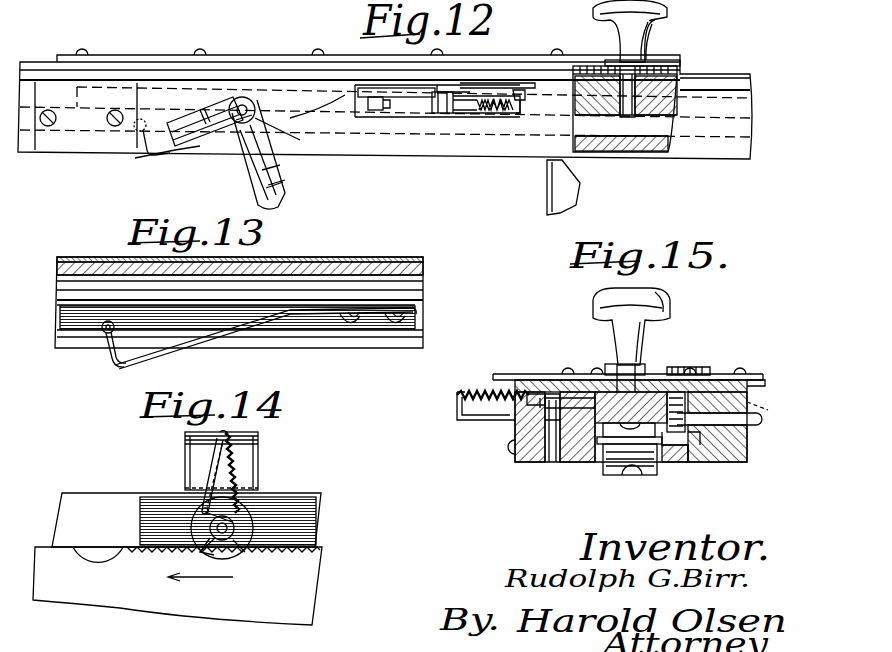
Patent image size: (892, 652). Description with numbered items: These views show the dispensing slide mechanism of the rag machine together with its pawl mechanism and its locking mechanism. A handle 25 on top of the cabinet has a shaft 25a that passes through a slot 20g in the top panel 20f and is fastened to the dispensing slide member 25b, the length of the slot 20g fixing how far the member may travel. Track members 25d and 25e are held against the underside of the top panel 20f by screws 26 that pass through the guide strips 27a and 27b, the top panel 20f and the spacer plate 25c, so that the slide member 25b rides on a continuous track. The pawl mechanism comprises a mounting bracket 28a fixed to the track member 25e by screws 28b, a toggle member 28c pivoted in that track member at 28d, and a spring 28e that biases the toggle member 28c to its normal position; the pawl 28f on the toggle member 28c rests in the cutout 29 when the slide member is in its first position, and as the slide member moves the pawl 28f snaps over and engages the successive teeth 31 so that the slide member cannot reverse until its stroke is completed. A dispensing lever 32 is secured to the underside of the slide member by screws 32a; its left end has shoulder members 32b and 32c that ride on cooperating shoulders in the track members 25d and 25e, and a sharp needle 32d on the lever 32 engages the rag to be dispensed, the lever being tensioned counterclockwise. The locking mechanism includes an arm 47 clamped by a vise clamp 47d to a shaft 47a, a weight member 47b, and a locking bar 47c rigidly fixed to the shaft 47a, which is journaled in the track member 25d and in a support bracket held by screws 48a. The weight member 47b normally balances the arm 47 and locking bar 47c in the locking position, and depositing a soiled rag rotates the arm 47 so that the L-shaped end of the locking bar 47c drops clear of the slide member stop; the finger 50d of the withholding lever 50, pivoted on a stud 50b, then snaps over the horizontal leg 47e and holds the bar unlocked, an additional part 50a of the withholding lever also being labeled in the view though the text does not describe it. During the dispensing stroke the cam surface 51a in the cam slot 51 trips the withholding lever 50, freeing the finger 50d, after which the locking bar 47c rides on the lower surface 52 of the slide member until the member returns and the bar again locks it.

In FIG. 15, the top panel 20f is at (787, 363).
In FIG. 15, the slot 20g is at (617, 367).
In FIG. 12, the handle 25 is at (660, 12).
In FIG. 15, the handle 25 is at (668, 304).
In FIG. 12, the shaft 25a is at (626, 106).
In FIG. 15, the shaft 25a is at (640, 365).
In FIG. 13, the dispensing slide member 25b is at (405, 300).
In FIG. 14, the dispensing slide member 25b is at (317, 598).
In FIG. 15, the dispensing slide member 25b is at (710, 353).
In FIG. 15, the spacer plate 25c is at (748, 390).
In FIG. 15, the track member 25d is at (735, 463).
In FIG. 14, the track member 25e is at (318, 513).
In FIG. 15, the track member 25e is at (530, 463).
In FIG. 15, the screws 26 is at (577, 372).
In FIG. 15, the guide strip 27a is at (565, 374).
In FIG. 12, the guide strip 27b is at (165, 60).
In FIG. 15, the guide strip 27b is at (742, 374).
In FIG. 14, the mounting bracket 28a is at (258, 468).
In FIG. 15, the mounting bracket 28a is at (472, 421).
In FIG. 14, the screws 28b is at (207, 470).
In FIG. 15, the screws 28b is at (510, 448).
In FIG. 14, the toggle member 28c is at (247, 522).
In FIG. 15, the toggle member 28c is at (537, 380).
In FIG. 15, the pivot 28d is at (568, 463).
In FIG. 14, the spring 28e is at (233, 457).
In FIG. 15, the spring 28e is at (478, 395).
In FIG. 14, the pawl 28f is at (195, 522).
In FIG. 14, the cutout 29 is at (98, 562).
In FIG. 14, the teeth 31 is at (145, 548).
In FIG. 12, the dispensing lever 32 is at (166, 158).
In FIG. 13, the dispensing lever 32 is at (180, 355).
In FIG. 15, the dispensing lever 32 is at (647, 477).
In FIG. 13, the screws 32a is at (372, 325).
In FIG. 15, the shoulder member 32b is at (670, 464).
In FIG. 15, the shoulder member 32c is at (595, 464).
In FIG. 12, the needle 32d is at (157, 157).
In FIG. 13, the needle 32d is at (110, 364).
In FIG. 15, the needle 32d is at (633, 477).
In FIG. 12, the arm 47 is at (286, 200).
In FIG. 12, the shaft 47a is at (258, 118).
In FIG. 15, the shaft 47a is at (753, 427).
In FIG. 12, the weight member 47b is at (200, 150).
In FIG. 12, the locking bar 47c is at (343, 84).
In FIG. 15, the locking bar 47c is at (688, 455).
In FIG. 12, the vise clamp 47d is at (250, 183).
In FIG. 12, the horizontal leg 47e is at (378, 112).
In FIG. 12, the screws 48a is at (55, 126).
In FIG. 12, the locking bar withholding lever 50 is at (482, 115).
In FIG. 12, the spring seat 50a is at (441, 90).
In FIG. 12, the stud 50b is at (430, 99).
In FIG. 12, the finger 50d is at (400, 112).
In FIG. 12, the cam slot 51 is at (466, 87).
In FIG. 12, the cam surface 51a is at (513, 90).
In FIG. 12, the lower surface 52 is at (398, 97).
In FIG. 13, the lower surface 52 is at (340, 292).
In FIG. 15, the lower surface 52 is at (736, 412).